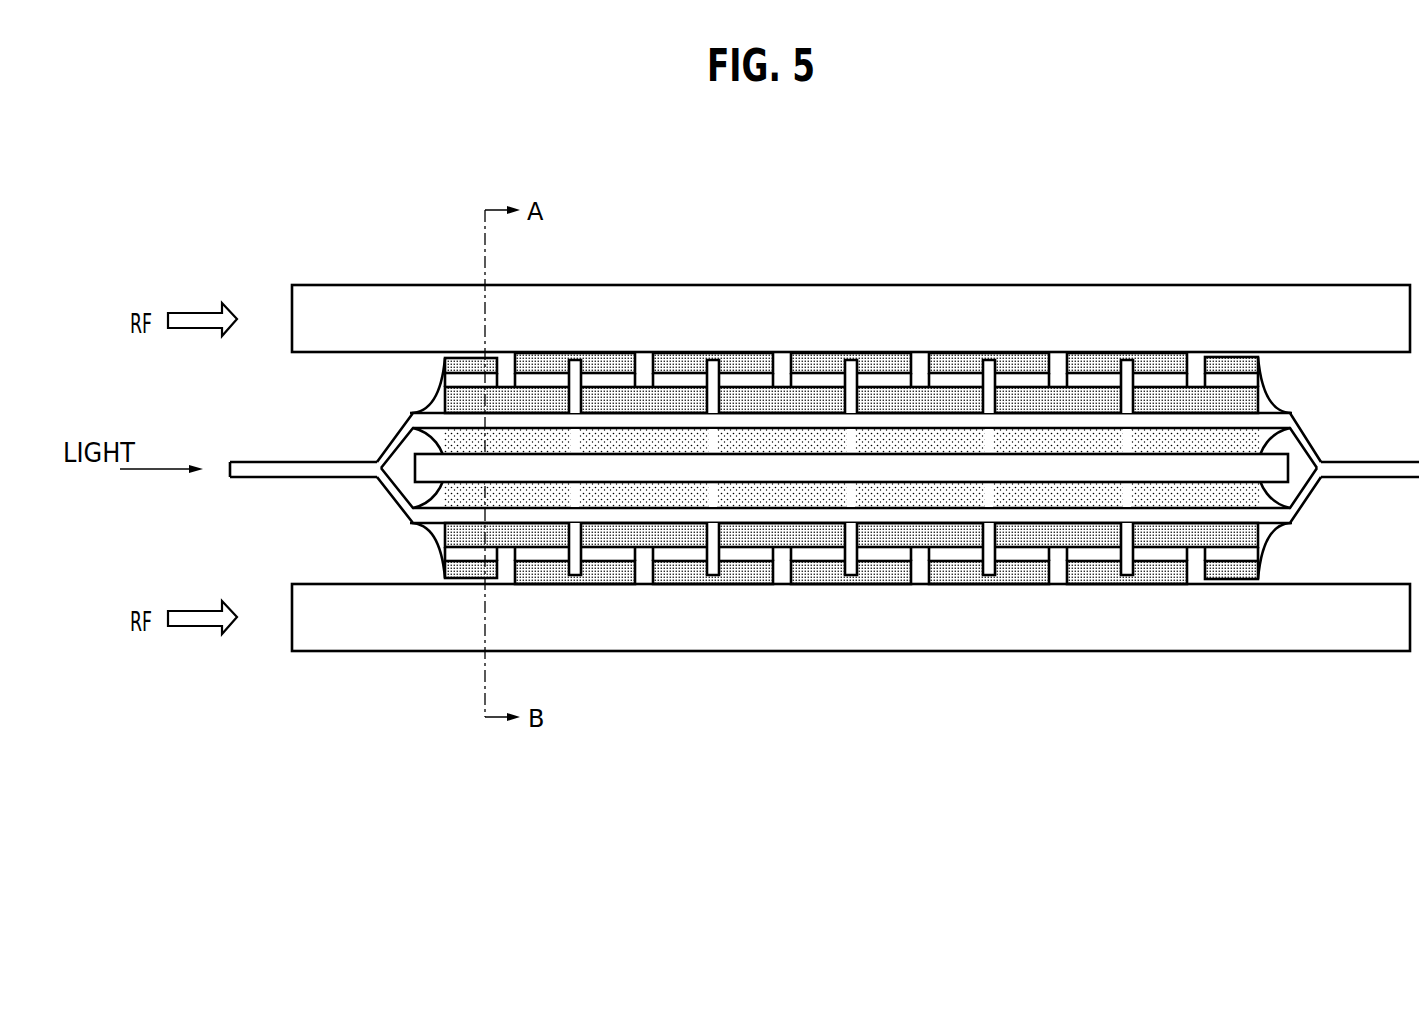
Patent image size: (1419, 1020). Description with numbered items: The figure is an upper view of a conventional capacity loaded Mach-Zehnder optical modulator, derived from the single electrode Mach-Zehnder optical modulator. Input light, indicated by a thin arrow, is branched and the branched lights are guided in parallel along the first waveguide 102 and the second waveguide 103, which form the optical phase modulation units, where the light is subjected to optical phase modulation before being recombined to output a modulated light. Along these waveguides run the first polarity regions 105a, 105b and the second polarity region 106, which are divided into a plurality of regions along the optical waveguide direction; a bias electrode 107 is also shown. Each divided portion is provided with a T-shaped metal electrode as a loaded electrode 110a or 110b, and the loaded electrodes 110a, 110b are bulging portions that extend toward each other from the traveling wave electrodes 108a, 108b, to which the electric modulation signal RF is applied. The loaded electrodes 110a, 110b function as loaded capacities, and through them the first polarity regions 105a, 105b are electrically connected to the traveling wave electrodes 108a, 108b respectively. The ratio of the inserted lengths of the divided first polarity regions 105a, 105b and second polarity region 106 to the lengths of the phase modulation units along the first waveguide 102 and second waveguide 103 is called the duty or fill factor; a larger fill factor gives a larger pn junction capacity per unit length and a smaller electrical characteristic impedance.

The first waveguide 102 is at (1205, 425).
The second waveguide 103 is at (1157, 512).
The first polarity region 105a is at (747, 398).
The first polarity region 105b is at (815, 535).
The second polarity region 106 is at (885, 500).
The bias electrode 107 is at (1053, 462).
The traveling wave electrode 108a is at (968, 318).
The traveling wave electrode 108b is at (938, 612).
The loaded electrode 110a is at (552, 382).
The loaded electrode 110b is at (540, 552).